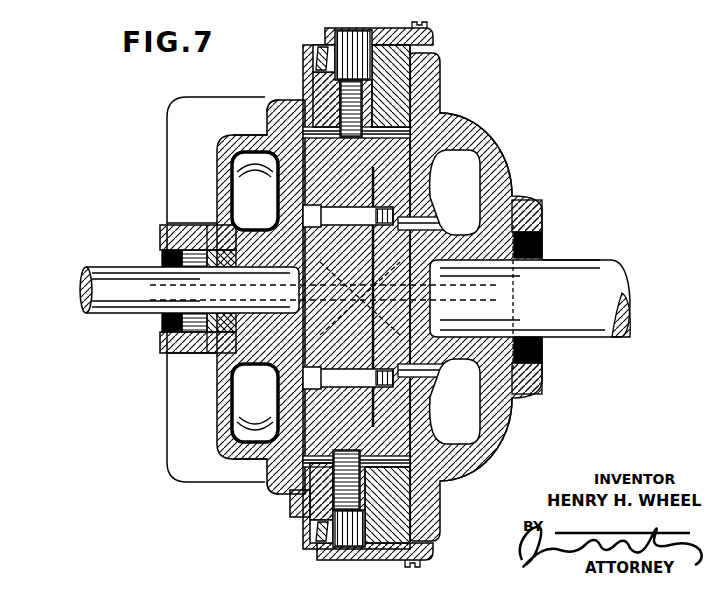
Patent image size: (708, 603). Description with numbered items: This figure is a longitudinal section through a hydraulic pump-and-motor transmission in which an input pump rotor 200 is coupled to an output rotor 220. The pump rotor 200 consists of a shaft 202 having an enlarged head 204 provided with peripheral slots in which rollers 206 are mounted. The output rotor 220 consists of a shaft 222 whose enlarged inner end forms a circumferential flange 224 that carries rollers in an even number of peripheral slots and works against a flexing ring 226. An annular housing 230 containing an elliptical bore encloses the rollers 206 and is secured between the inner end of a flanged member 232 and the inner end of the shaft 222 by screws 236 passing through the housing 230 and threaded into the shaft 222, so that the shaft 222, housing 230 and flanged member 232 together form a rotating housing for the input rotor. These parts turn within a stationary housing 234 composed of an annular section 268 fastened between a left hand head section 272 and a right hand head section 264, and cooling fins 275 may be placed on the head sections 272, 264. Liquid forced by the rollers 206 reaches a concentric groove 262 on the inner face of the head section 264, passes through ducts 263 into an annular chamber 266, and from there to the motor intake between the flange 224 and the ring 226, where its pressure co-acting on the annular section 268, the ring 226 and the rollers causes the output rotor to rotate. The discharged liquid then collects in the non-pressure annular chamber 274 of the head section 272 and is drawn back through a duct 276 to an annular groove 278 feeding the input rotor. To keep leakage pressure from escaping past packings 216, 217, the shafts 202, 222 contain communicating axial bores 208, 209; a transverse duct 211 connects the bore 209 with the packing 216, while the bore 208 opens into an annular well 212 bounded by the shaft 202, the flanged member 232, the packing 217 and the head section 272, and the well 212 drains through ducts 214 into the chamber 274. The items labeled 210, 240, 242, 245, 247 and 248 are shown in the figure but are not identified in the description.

The pump rotor 200 is at (95, 256).
The shaft 202 is at (95, 282).
The enlarged head 204 is at (436, 268).
The rollers 206 is at (425, 316).
The axial bore 208 is at (140, 312).
The axial bore 209 is at (560, 312).
The seal 210 is at (160, 262).
The transverse duct 211 is at (548, 260).
The annular well 212 is at (167, 228).
The ducts 214 is at (213, 350).
The packing 216 is at (543, 242).
The packing 217 is at (160, 323).
The output rotor 220 is at (609, 250).
The shaft 222 is at (596, 288).
The circumferential flange 224 is at (262, 136).
The flexing ring 226 is at (480, 115).
The annular housing 230 is at (445, 100).
The flanged member 232 is at (220, 253).
The stationary housing 234 is at (305, 60).
The screws 236 is at (232, 162).
The rotor rim 240 is at (275, 125).
The clamp collar 242 is at (311, 110).
The threaded stud 245 is at (365, 88).
The stud head 247 is at (317, 47).
The cap plate 248 is at (433, 52).
The concentric groove 262 is at (388, 302).
The ducts 263 is at (425, 301).
The right hand head section 264 is at (510, 193).
The annular chamber 266 is at (505, 170).
The annular section 268 is at (410, 98).
The left hand head section 272 is at (227, 190).
The annular chamber 274 is at (247, 182).
The cooling fins 275 is at (188, 107).
The duct 276 is at (255, 297).
The annular groove 278 is at (255, 297).